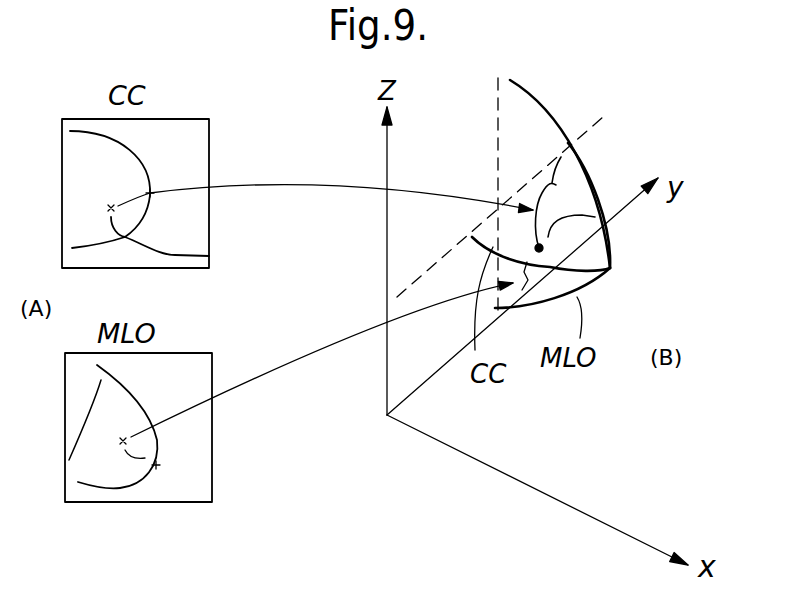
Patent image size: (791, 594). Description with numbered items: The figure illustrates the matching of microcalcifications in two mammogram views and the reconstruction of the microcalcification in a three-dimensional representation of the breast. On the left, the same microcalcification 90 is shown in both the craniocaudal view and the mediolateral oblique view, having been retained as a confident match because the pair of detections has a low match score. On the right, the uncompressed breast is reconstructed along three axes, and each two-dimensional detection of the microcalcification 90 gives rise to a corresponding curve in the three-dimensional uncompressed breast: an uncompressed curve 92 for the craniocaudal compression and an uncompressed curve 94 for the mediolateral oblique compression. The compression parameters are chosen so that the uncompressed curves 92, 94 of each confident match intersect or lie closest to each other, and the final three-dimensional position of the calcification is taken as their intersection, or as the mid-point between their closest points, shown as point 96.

The microcalcification 90 is at (209, 256).
The uncompressed curve 92 is at (556, 185).
The uncompressed curve 94 is at (545, 243).
The point 96 is at (553, 253).